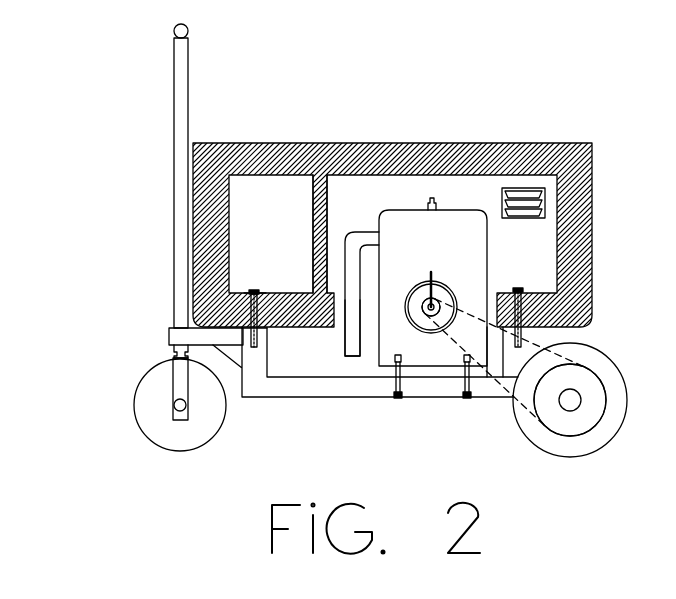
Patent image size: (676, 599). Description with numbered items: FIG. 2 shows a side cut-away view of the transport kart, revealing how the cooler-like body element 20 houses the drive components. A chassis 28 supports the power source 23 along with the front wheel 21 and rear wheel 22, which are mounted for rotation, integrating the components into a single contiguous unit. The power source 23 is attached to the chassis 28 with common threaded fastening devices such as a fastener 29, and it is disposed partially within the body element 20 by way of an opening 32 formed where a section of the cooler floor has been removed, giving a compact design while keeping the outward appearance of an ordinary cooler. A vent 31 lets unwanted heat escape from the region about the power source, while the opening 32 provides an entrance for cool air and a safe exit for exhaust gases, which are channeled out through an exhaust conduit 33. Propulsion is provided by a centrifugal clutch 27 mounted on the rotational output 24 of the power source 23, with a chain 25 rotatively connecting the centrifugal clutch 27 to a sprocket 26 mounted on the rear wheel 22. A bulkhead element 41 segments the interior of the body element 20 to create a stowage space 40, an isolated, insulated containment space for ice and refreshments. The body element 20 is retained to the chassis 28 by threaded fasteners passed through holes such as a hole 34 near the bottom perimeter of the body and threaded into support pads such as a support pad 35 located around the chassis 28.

The body element 20 is at (593, 204).
The wheel 21 is at (140, 426).
The rear wheel 22 is at (530, 428).
The power source 23 is at (487, 250).
The rotational output 24 is at (431, 282).
The chain 25 is at (468, 320).
The sprocket 26 is at (600, 391).
The centrifugal clutch 27 is at (416, 306).
The chassis 28 is at (254, 378).
The fastener 29 is at (398, 400).
The vent 31 is at (501, 201).
The opening 32 is at (368, 320).
The exhaust conduit 33 is at (362, 244).
The hole 34 is at (262, 296).
The support pad 35 is at (265, 335).
The stowage space 40 is at (255, 190).
The bulkhead element 41 is at (330, 195).